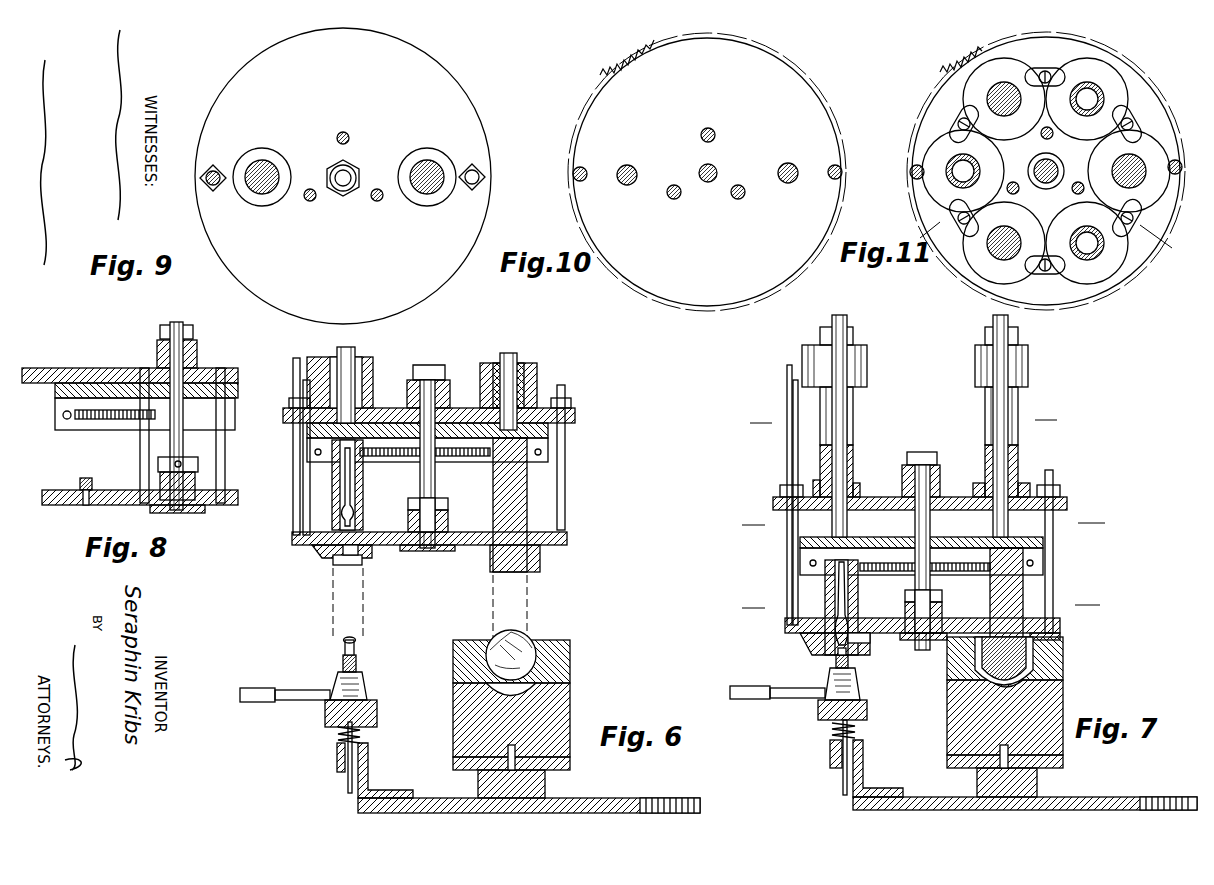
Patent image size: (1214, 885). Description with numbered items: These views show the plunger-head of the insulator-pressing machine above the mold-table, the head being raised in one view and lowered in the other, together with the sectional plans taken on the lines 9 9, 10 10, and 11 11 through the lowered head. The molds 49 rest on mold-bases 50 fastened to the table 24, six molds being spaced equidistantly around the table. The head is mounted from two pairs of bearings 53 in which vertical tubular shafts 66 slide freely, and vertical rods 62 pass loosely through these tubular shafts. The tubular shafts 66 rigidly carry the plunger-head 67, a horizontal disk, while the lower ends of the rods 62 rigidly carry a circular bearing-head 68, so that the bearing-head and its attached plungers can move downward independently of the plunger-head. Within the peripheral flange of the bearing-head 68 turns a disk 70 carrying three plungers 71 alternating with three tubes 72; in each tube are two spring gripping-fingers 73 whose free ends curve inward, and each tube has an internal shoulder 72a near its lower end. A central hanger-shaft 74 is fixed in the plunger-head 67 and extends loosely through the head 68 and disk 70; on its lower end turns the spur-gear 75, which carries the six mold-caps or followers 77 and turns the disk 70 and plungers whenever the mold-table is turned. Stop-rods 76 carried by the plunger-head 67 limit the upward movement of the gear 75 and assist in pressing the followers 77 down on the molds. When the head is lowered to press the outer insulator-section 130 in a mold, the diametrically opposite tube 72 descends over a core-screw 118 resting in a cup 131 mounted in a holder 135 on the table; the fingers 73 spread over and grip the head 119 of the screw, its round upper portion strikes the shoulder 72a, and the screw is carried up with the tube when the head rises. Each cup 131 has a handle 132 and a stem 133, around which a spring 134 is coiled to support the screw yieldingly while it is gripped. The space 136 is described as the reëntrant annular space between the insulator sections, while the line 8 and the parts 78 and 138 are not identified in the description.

In FIG. 11, the section line for Fig. 8 is at (1038, 235).
In FIG. 7, the section line 9 9 is at (902, 422).
In FIG. 7, the section line 10 10 is at (923, 525).
In FIG. 7, the section line 11 11 is at (921, 607).
In FIG. 6, the mold-table 24 is at (605, 798).
In FIG. 7, the mold-table 24 is at (1122, 797).
In FIG. 6, the molds 49 is at (570, 708).
In FIG. 7, the molds 49 is at (1063, 705).
In FIG. 6, the mold-bases 50 is at (545, 782).
In FIG. 7, the mold-bases 50 is at (1037, 783).
In FIG. 6, the bearings 53 is at (373, 370).
In FIG. 7, the bearings 53 is at (867, 372).
In FIG. 9, the vertical rods 62 is at (278, 170).
In FIG. 10, the vertical rods 62 is at (637, 172).
In FIG. 6, the vertical rods 62 is at (352, 355).
In FIG. 7, the vertical rods 62 is at (847, 322).
In FIG. 9, the tubular shafts 66 is at (255, 195).
In FIG. 6, the tubular shafts 66 is at (373, 362).
In FIG. 7, the tubular shafts 66 is at (853, 337).
In FIG. 9, the plunger-head 67 is at (343, 176).
In FIG. 8, the plunger-head 67 is at (55, 368).
In FIG. 6, the plunger-head 67 is at (575, 413).
In FIG. 7, the plunger-head 67 is at (1067, 502).
In FIG. 10, the bearing-head 68 is at (707, 172).
In FIG. 8, the bearing-head 68 is at (55, 408).
In FIG. 6, the bearing-head 68 is at (548, 430).
In FIG. 7, the bearing-head 68 is at (970, 537).
In FIG. 8, the disk 70 is at (103, 420).
In FIG. 7, the disk 70 is at (880, 562).
In FIG. 11, the plungers 71 is at (1005, 85).
In FIG. 6, the plungers 71 is at (493, 500).
In FIG. 7, the plungers 71 is at (990, 598).
In FIG. 11, the tubes 72 is at (970, 171).
In FIG. 6, the tubes 72 is at (363, 492).
In FIG. 7, the tubes 72 is at (858, 600).
In FIG. 6, the internal shoulder 72a is at (408, 506).
In FIG. 7, the internal shoulder 72a is at (835, 648).
In FIG. 6, the spring gripping-fingers 73 is at (342, 508).
In FIG. 7, the spring gripping-fingers 73 is at (838, 612).
In FIG. 9, the hanger-shaft 74 is at (343, 190).
In FIG. 11, the hanger-shaft 74 is at (1052, 166).
In FIG. 8, the hanger-shaft 74 is at (183, 440).
In FIG. 6, the hanger-shaft 74 is at (435, 478).
In FIG. 7, the hanger-shaft 74 is at (930, 525).
In FIG. 10, the spur-gear 75 is at (578, 118).
In FIG. 11, the spur-gear 75 is at (935, 88).
In FIG. 8, the spur-gear 75 is at (110, 505).
In FIG. 6, the spur-gear 75 is at (567, 535).
In FIG. 7, the spur-gear 75 is at (822, 640).
In FIG. 9, the stop-rods 76 is at (483, 181).
In FIG. 10, the stop-rods 76 is at (586, 170).
In FIG. 11, the stop-rods 76 is at (910, 172).
In FIG. 6, the stop-rods 76 is at (293, 375).
In FIG. 7, the stop-rods 76 is at (793, 548).
In FIG. 11, the mold-caps or followers 77 is at (1140, 210).
In FIG. 6, the mold-caps or followers 77 is at (355, 562).
In FIG. 7, the mold-caps or followers 77 is at (866, 640).
In FIG. 9, the rod 78 is at (213, 188).
In FIG. 7, the rod 78 is at (787, 450).
In FIG. 6, the core-screw 118 is at (356, 660).
In FIG. 7, the core-screw 118 is at (850, 662).
In FIG. 6, the head of core-screw 119 is at (355, 642).
In FIG. 7, the head of core-screw 119 is at (832, 675).
In FIG. 7, the upper or outer section of insulator 130 is at (1063, 668).
In FIG. 6, the cups 131 is at (367, 690).
In FIG. 7, the cups 131 is at (860, 690).
In FIG. 6, the handle 132 is at (290, 700).
In FIG. 7, the handle 132 is at (776, 700).
In FIG. 6, the stem 133 is at (348, 778).
In FIG. 7, the stem 133 is at (843, 782).
In FIG. 6, the springs 134 is at (362, 733).
In FIG. 7, the springs 134 is at (857, 730).
In FIG. 6, the holders 135 is at (368, 760).
In FIG. 7, the holders 135 is at (863, 760).
In FIG. 8, the reëntrant annular space 136 is at (198, 468).
In FIG. 8, the bolt 138 is at (140, 473).